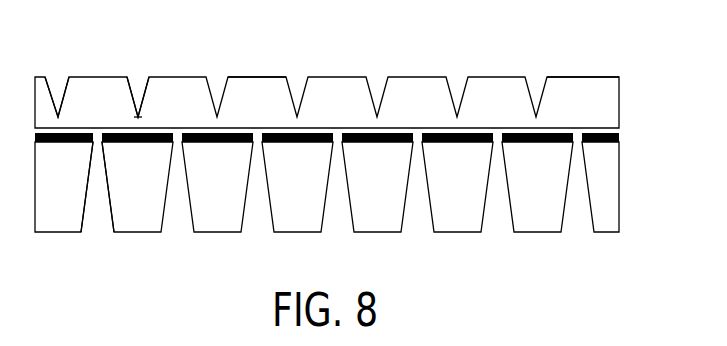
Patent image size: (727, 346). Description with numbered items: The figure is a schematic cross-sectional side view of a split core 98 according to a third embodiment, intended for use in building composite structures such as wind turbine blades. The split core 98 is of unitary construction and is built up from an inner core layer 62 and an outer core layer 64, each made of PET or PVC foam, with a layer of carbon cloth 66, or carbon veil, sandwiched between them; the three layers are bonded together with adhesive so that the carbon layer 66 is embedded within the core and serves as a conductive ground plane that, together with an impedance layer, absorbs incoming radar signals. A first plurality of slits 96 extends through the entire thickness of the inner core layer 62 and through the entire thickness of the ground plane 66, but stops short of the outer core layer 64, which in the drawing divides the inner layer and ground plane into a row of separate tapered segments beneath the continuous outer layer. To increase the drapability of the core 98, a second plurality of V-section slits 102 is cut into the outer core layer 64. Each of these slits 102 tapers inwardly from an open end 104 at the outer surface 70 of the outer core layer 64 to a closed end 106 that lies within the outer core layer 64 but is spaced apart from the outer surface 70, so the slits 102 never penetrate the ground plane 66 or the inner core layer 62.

The inner core layer 62 is at (610, 188).
The outer core layer 64 is at (612, 104).
The carbon cloth layer 66 is at (640, 145).
The outer surface of the outer core layer 70 is at (262, 65).
The first plurality of slits 96 is at (92, 235).
The split core 98 is at (583, 52).
The V-section slits 102 is at (55, 74).
The open end 104 is at (138, 84).
The closed end 106 is at (150, 117).